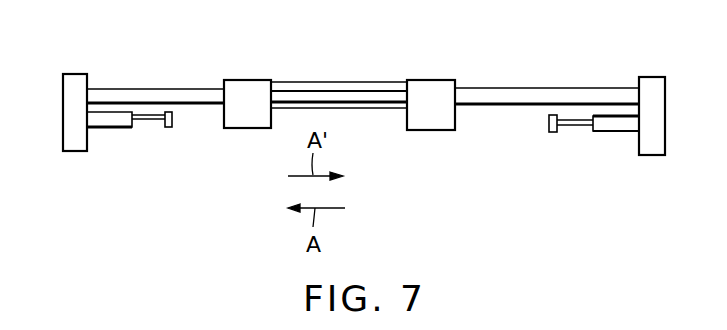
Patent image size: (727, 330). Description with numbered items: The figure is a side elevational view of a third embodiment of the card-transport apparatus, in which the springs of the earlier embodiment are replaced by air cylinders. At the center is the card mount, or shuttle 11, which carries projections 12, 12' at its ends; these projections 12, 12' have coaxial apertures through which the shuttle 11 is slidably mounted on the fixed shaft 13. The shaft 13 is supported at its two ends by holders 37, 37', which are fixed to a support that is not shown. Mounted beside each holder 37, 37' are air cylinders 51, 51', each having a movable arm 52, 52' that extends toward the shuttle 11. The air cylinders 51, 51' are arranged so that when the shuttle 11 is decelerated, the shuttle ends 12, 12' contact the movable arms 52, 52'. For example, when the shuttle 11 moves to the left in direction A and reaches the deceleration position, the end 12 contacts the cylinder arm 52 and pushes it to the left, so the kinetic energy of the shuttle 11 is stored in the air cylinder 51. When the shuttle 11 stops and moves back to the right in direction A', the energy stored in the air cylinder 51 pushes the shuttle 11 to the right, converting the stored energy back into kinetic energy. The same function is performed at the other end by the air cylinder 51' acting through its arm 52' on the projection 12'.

The holder 37 is at (75, 86).
The holder 37' is at (652, 88).
The projection 12 is at (247, 76).
The projection 12' is at (431, 77).
The card mount (shuttle) 11 is at (333, 82).
The fixed shaft 13 is at (525, 98).
The air cylinder 51 is at (113, 148).
The air cylinder 51' is at (616, 151).
The movable arm 52 is at (160, 148).
The movable arm 52' is at (569, 150).